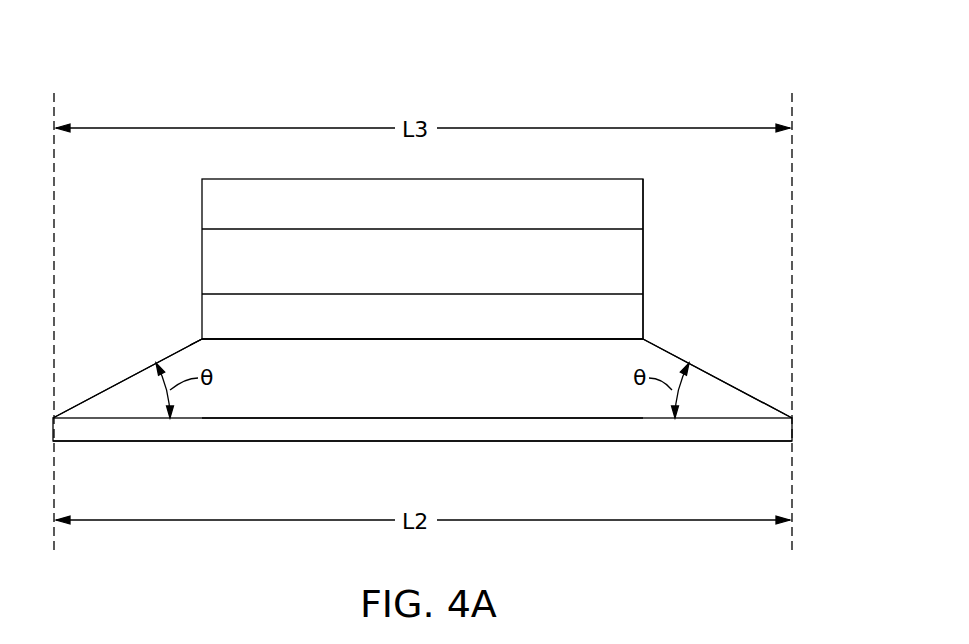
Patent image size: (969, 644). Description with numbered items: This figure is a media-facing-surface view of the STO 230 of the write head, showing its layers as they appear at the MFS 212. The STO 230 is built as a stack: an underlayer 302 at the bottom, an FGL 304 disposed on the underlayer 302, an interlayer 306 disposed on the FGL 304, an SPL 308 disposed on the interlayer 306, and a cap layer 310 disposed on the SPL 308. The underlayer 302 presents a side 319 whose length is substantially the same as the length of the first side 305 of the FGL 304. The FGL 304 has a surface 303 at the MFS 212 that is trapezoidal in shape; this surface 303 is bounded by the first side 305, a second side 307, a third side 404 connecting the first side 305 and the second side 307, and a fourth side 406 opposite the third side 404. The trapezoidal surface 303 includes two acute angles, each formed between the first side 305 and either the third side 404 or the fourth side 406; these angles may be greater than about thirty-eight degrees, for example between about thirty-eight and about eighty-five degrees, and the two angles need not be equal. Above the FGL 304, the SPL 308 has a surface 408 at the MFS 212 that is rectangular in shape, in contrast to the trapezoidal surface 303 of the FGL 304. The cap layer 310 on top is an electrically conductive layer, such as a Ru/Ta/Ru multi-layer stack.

The STO 230 is at (732, 49).
The MFS 212 is at (175, 216).
The underlayer 302 is at (527, 427).
The FGL 304 is at (438, 396).
The interlayer 306 is at (438, 329).
The SPL 308 is at (438, 274).
The cap layer 310 is at (438, 216).
The surface 303 is at (210, 357).
The first side 305 is at (572, 418).
The second side 307 is at (513, 340).
The side 319 is at (653, 442).
The third side 404 is at (95, 397).
The fourth side 406 is at (695, 367).
The surface 408 is at (627, 265).